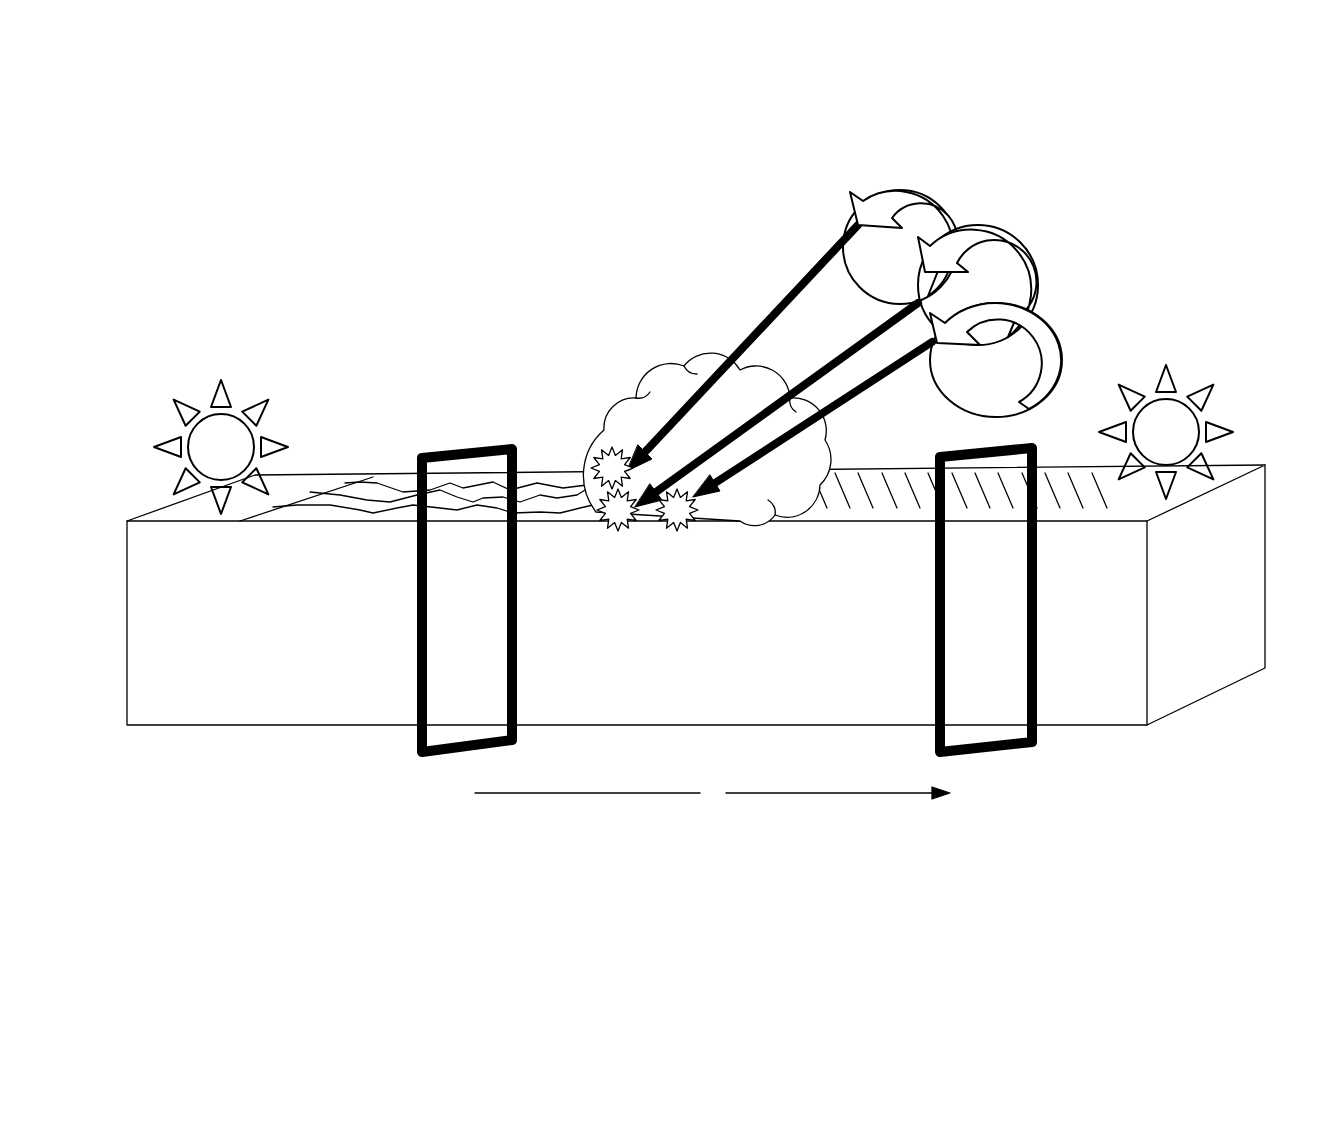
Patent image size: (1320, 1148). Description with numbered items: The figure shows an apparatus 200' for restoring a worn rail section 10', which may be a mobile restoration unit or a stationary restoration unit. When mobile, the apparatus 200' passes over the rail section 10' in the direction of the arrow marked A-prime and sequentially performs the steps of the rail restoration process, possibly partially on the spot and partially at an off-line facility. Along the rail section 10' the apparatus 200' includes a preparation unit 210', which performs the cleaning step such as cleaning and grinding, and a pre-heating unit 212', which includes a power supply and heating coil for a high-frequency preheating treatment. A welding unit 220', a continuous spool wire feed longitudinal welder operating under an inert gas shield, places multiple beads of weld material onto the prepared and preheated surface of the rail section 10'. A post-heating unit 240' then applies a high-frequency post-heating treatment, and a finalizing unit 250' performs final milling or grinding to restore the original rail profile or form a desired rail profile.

The apparatus 200' is at (698, 534).
The rail section 10' is at (696, 619).
The finalizing unit 250' is at (239, 416).
The preparation unit 210' is at (1184, 400).
The welding unit 220' is at (844, 328).
The post-heating unit 240' is at (422, 633).
The pre-heating unit 212' is at (1020, 624).